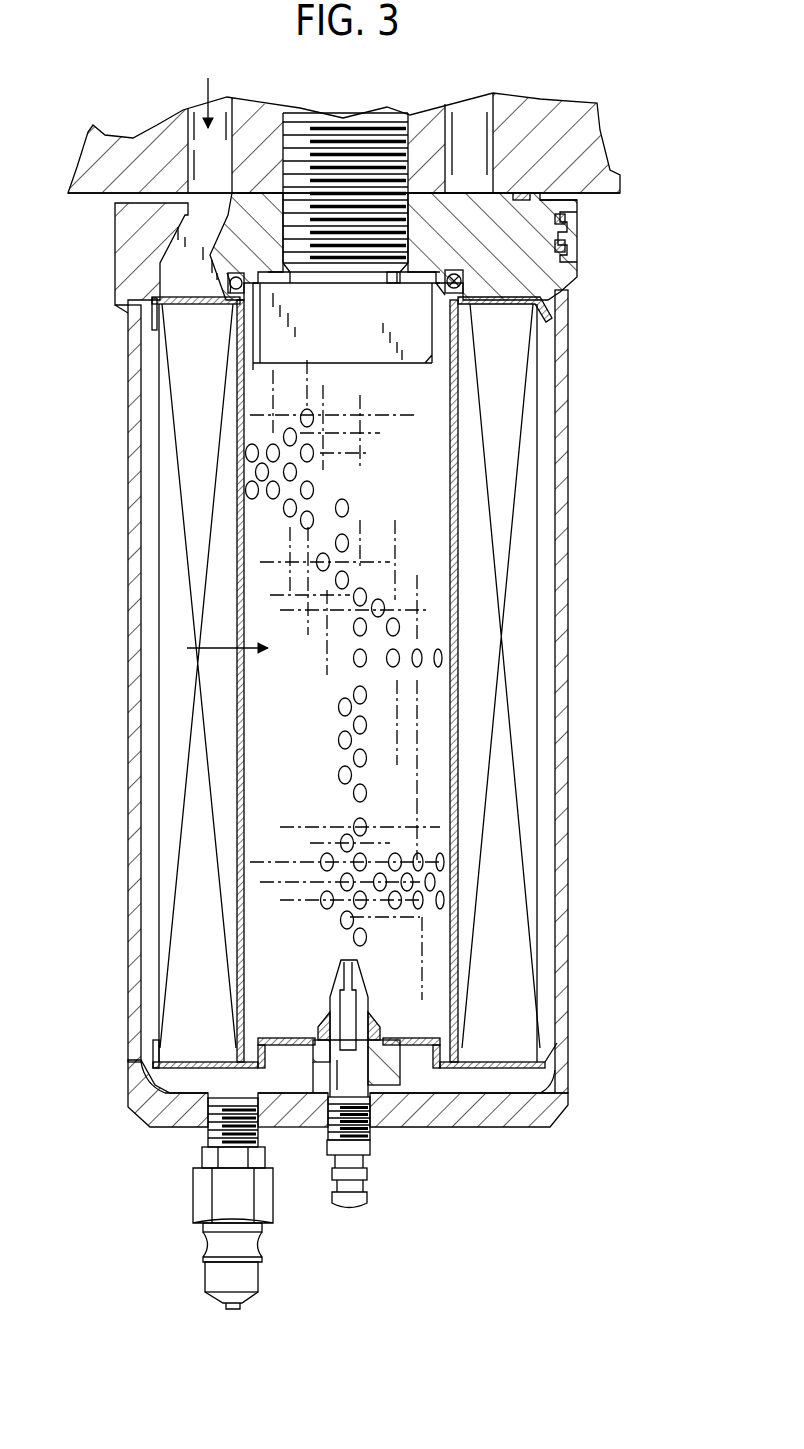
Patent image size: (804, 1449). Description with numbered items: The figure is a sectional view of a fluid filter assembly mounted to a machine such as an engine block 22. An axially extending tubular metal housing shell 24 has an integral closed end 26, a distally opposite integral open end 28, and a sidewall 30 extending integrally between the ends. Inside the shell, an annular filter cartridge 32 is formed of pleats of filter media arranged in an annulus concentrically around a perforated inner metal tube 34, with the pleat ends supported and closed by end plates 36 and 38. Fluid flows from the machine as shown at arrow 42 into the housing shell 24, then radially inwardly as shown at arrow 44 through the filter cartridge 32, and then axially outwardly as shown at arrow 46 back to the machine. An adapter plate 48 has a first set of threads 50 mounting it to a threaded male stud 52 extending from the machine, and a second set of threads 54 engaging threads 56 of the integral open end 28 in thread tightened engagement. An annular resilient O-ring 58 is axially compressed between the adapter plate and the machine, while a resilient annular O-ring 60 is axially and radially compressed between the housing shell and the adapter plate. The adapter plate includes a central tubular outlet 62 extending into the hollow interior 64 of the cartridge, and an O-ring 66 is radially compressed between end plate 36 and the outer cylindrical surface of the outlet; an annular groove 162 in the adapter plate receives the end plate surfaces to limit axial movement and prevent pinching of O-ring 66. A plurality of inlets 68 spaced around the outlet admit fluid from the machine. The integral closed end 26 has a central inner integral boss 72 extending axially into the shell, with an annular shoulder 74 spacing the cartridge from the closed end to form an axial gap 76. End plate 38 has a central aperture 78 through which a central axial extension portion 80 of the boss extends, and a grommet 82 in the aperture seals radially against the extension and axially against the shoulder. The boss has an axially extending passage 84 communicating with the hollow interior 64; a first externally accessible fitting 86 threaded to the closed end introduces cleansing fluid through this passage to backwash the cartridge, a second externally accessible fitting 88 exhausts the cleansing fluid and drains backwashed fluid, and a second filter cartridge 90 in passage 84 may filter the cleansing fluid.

The engine block 22 is at (588, 151).
The tubular metal housing shell 24 is at (118, 837).
The integral closed end 26 is at (515, 1128).
The integral open end 28 is at (577, 205).
The sidewall 30 is at (567, 713).
The annular filter cartridge 32 is at (523, 758).
The perforated inner metal tube 34 is at (450, 777).
The end plate 36 is at (502, 307).
The end plate 38 is at (495, 1060).
The arrow (fluid flow from machine) 42 is at (206, 92).
The arrow (radially inward flow) 44 is at (225, 648).
The arrow (axially outward flow) 46 is at (343, 278).
The adapter plate 48 is at (550, 290).
The first set of threads 50 is at (410, 217).
The threaded male stud 52 is at (370, 262).
The second set of threads 54 is at (553, 237).
The threads 56 is at (575, 250).
The annular resilient O-ring 58 is at (523, 193).
The resilient annular O-ring 60 is at (575, 223).
The central tubular outlet 62 is at (450, 376).
The hollow interior 64 is at (438, 600).
The O-ring 66 is at (448, 313).
The inlet 68 is at (189, 295).
The central inner integral boss 72 is at (387, 1082).
The annular shoulder 74 is at (380, 1075).
The axial gap 76 is at (527, 1078).
The central aperture 78 is at (372, 1033).
The central axial extension portion 80 is at (363, 997).
The grommet 82 is at (323, 1030).
The axially extending passage 84 is at (345, 1072).
The first externally accessible fitting 86 is at (368, 1200).
The second externally accessible fitting 88 is at (258, 1268).
The second filter cartridge 90 is at (352, 1007).
The annular groove 162 is at (440, 285).